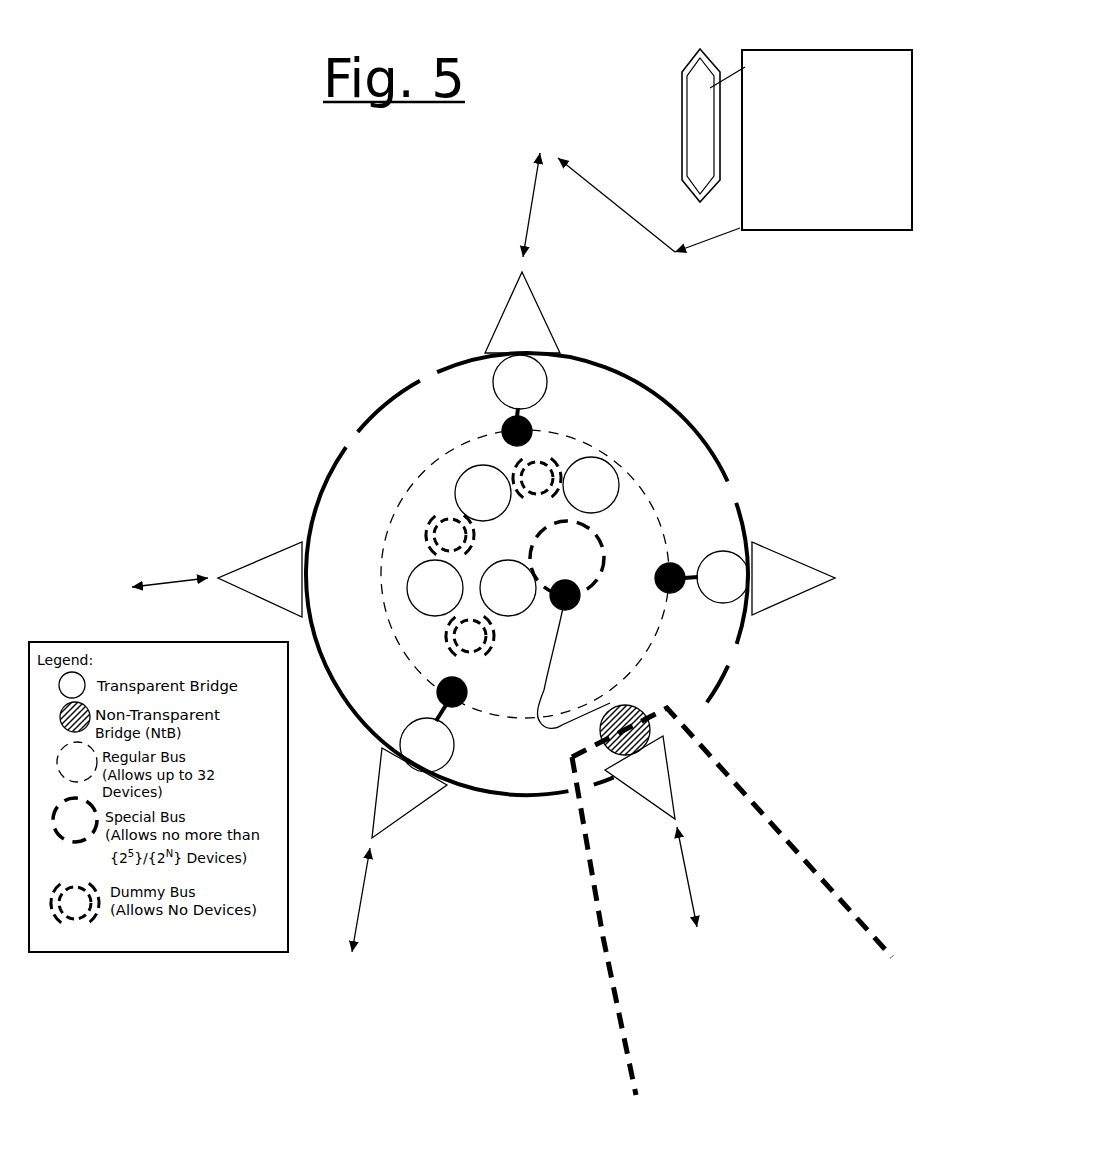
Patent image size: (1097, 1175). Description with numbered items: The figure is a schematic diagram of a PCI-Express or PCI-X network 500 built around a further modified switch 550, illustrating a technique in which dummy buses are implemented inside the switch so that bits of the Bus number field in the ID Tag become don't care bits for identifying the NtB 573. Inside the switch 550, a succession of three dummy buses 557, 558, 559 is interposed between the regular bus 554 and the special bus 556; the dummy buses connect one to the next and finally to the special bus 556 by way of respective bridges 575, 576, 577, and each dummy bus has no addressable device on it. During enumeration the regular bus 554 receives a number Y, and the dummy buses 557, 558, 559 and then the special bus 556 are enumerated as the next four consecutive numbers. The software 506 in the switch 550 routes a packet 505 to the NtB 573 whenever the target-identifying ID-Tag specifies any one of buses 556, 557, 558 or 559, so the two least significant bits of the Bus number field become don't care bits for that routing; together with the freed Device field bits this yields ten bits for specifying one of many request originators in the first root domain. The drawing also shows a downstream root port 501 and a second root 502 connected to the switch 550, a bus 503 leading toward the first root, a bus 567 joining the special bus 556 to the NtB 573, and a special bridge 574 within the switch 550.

The PCI-Express or PCI-X network 500 is at (240, 160).
The Root #1 downstream port 501 is at (373, 1033).
The Root #2 502 is at (741, 1023).
The bus to Root #1 503 is at (622, 1015).
The packet 505 is at (686, 64).
The software 506 is at (744, 62).
The switch 550 is at (745, 524).
The regular bus 554 is at (662, 638).
The special bus 556 is at (567, 565).
The dummy bus 557 is at (533, 480).
The dummy bus 558 is at (450, 535).
The dummy bus 559 is at (470, 635).
The bus to non-transparent bridge 567 is at (572, 738).
The NtB 573 is at (622, 697).
The special bridge 574 is at (604, 498).
The bridge 575 is at (483, 493).
The bridge 576 is at (435, 588).
The bridge 577 is at (508, 588).